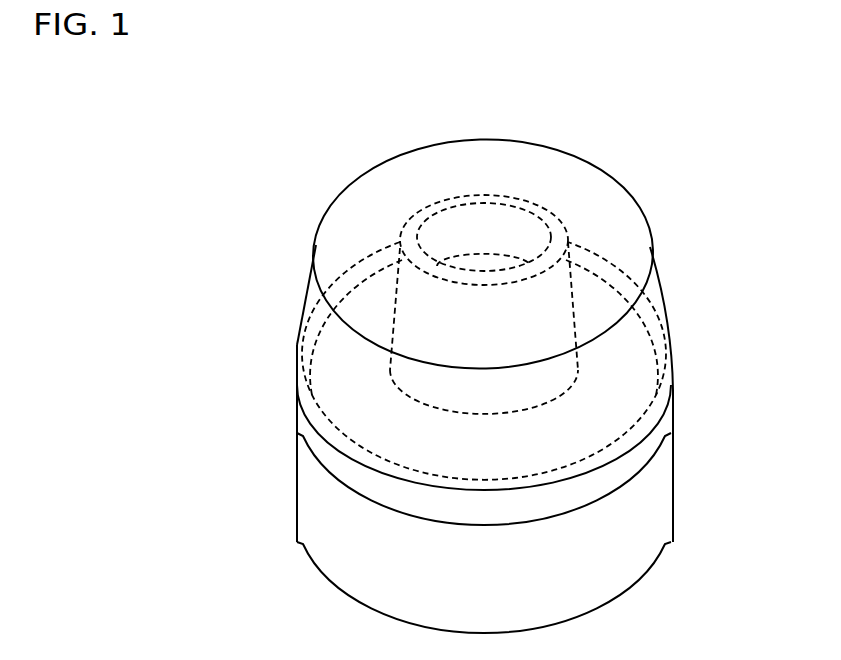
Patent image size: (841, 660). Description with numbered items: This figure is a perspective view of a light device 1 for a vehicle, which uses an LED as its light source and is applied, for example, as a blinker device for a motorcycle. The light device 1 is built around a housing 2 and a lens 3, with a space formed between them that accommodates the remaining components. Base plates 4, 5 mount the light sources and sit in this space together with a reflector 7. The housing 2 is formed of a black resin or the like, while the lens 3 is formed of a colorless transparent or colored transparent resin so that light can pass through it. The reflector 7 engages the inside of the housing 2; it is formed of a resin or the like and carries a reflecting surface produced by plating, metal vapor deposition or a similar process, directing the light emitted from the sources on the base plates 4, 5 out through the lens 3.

The light device 1 is at (317, 150).
The housing 2 is at (640, 505).
The lens 3 is at (568, 175).
The base plate 4 is at (577, 280).
The base plate 5 is at (633, 362).
The reflector 7 is at (362, 388).